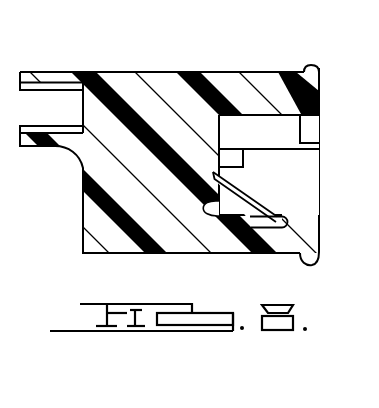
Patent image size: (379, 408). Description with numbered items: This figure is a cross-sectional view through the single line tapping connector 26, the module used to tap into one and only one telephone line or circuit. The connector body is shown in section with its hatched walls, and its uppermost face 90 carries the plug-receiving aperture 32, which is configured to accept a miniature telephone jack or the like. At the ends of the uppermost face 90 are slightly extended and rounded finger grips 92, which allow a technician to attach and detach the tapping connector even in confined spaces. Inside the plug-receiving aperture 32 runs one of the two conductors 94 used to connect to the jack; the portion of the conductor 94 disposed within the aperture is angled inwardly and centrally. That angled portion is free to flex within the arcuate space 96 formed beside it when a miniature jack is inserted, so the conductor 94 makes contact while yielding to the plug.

The single line tapping connector 26 is at (136, 72).
The uppermost face 90 is at (320, 90).
The finger grips 92 is at (311, 68).
The plug-receiving aperture 32 is at (333, 177).
The conductors 94 is at (263, 204).
The arcuate space 96 is at (204, 209).